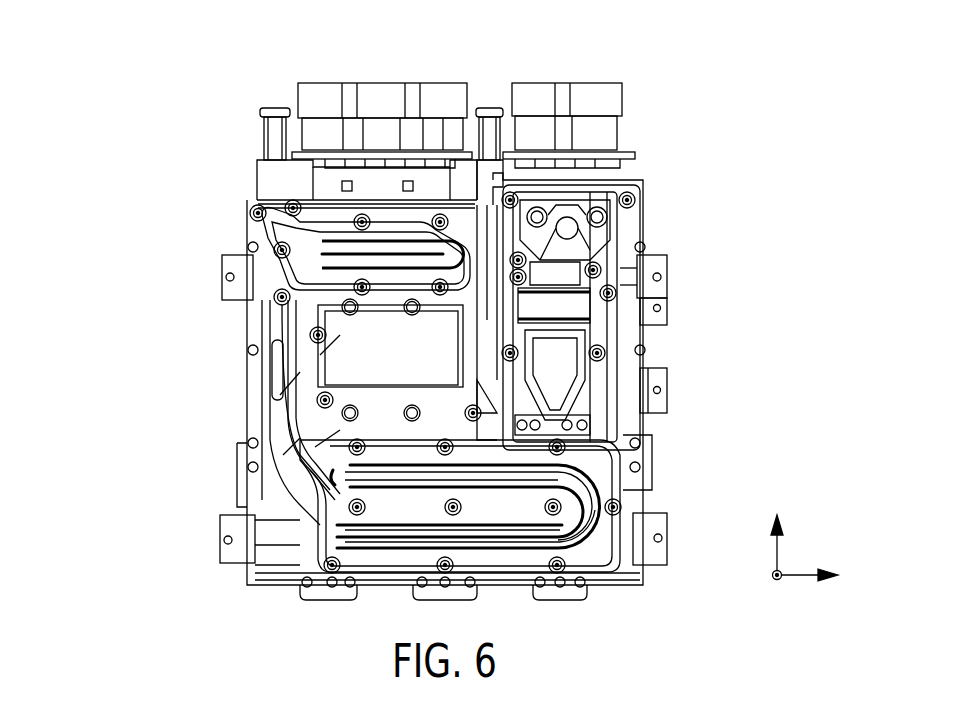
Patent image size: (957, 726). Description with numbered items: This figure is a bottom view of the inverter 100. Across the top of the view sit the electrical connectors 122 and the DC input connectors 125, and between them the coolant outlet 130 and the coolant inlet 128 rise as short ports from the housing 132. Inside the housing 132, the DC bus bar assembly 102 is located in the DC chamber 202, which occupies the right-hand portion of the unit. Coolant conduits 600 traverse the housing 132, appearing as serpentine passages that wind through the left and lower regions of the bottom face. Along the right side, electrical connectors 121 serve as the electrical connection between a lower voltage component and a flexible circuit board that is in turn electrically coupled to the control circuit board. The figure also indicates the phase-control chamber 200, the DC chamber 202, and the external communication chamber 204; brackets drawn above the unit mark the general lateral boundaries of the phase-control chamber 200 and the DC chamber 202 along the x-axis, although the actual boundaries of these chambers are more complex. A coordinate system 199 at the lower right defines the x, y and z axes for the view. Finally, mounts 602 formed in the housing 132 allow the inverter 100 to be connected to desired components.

The inverter 100 is at (132, 88).
The DC bus bar assembly 102 is at (600, 215).
The electrical connectors 121 is at (660, 315).
The electrical connectors 122 is at (450, 90).
The DC input connectors 125 is at (612, 97).
The coolant inlet 128 is at (489, 98).
The coolant outlet 130 is at (268, 103).
The housing 132 is at (222, 392).
The coordinate system 199 is at (795, 563).
The phase-control chamber 200 is at (455, 58).
The DC chamber 202 is at (595, 58).
The external communication chamber 204 is at (640, 275).
The coolant conduits 600 is at (595, 490).
The mounts 602 is at (660, 552).